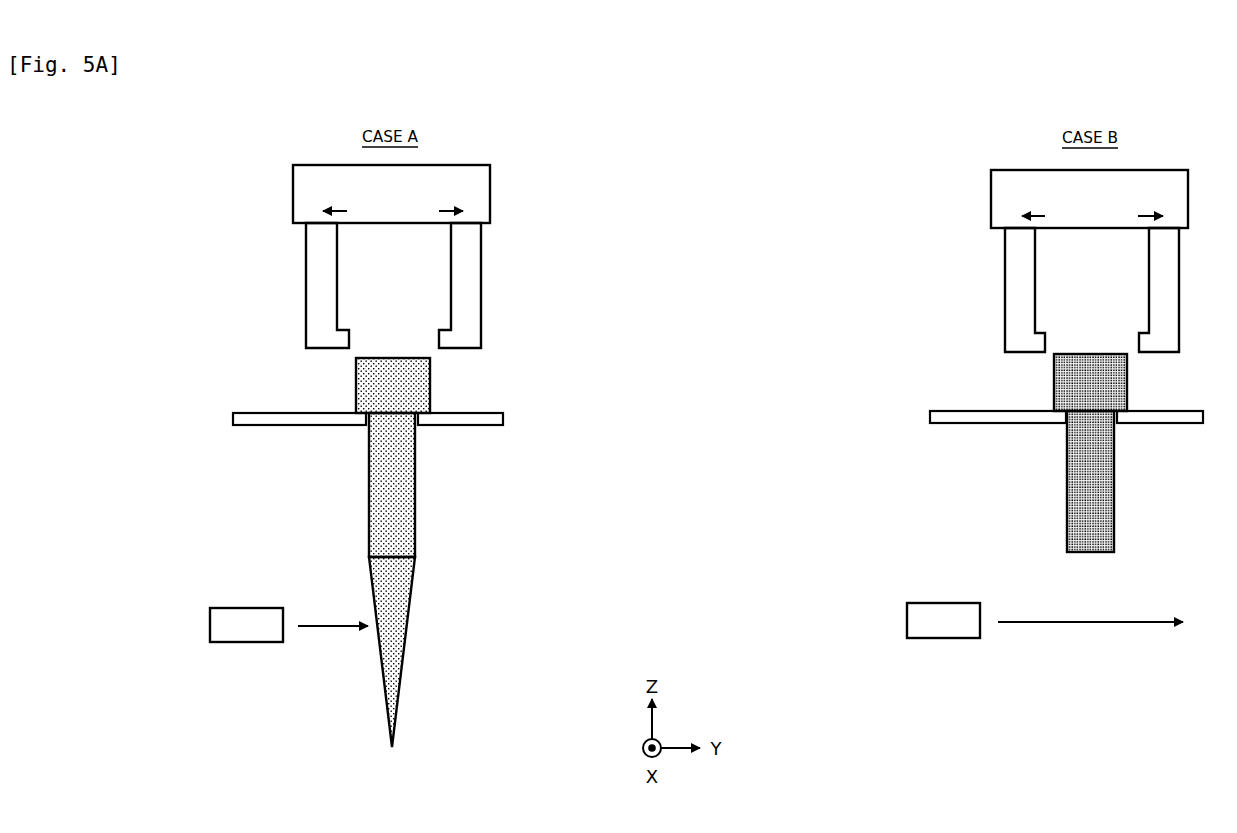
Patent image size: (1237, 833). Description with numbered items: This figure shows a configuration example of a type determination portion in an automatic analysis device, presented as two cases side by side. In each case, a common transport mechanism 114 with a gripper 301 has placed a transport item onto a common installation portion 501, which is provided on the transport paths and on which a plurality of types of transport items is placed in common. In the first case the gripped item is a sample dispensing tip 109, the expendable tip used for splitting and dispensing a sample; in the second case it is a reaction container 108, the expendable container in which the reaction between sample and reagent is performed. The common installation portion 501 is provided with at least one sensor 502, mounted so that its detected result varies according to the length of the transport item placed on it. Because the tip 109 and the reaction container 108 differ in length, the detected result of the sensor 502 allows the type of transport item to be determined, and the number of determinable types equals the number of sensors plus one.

The common transport mechanism 114 is at (270, 206).
The gripper 301 is at (306, 258).
The common installation portion 501 is at (233, 421).
The sample dispensing tip 109 is at (415, 534).
The reaction container 108 is at (1114, 521).
The sensor 502 is at (210, 625).